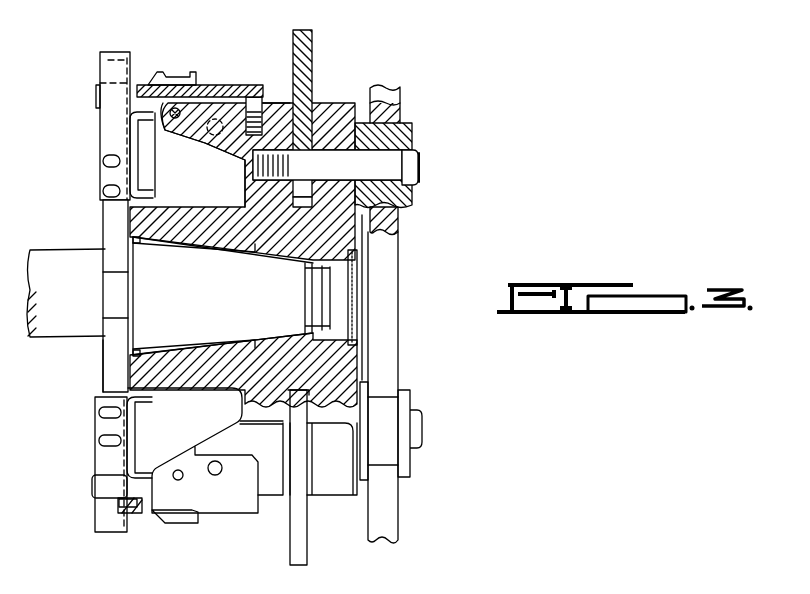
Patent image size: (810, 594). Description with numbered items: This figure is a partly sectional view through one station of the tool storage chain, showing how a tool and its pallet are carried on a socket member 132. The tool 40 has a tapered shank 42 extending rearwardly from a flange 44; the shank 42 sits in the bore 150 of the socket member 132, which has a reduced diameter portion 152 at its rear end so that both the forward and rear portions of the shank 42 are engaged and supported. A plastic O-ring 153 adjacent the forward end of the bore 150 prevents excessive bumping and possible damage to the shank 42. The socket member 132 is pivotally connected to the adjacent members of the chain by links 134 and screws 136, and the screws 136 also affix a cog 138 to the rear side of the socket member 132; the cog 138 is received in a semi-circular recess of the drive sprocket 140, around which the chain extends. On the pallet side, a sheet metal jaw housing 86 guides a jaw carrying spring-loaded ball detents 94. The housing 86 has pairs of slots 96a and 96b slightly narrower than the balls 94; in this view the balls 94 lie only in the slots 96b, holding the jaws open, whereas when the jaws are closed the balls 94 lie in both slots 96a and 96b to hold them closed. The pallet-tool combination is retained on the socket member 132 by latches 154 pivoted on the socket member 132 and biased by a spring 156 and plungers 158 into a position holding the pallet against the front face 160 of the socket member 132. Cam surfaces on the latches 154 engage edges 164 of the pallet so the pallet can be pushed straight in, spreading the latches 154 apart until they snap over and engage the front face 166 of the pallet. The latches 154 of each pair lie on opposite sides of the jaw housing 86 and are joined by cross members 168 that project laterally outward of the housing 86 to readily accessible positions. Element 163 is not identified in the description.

The tool 40 is at (50, 262).
The tapered shank 42 is at (188, 286).
The flange 44 is at (108, 358).
The jaw housing 86 is at (110, 62).
The ball detent 94 is at (105, 205).
The slot 96a is at (133, 407).
The slot 96b is at (110, 160).
The socket member 132 is at (333, 118).
The link 134 is at (312, 40).
The screw 136 is at (390, 167).
The cog 138 is at (412, 133).
The drive sprocket 140 is at (390, 277).
The bore 150 is at (240, 343).
The reduced diameter portion 152 is at (340, 350).
The plastic O-ring 153 is at (140, 353).
The latch 154 is at (137, 95).
The spring 156 is at (277, 100).
The plunger 158 is at (253, 93).
The front face 160 is at (130, 158).
The clamp block 163 is at (118, 468).
The edge 164 is at (163, 150).
The front face 166 is at (127, 428).
The cross member 168 is at (185, 80).